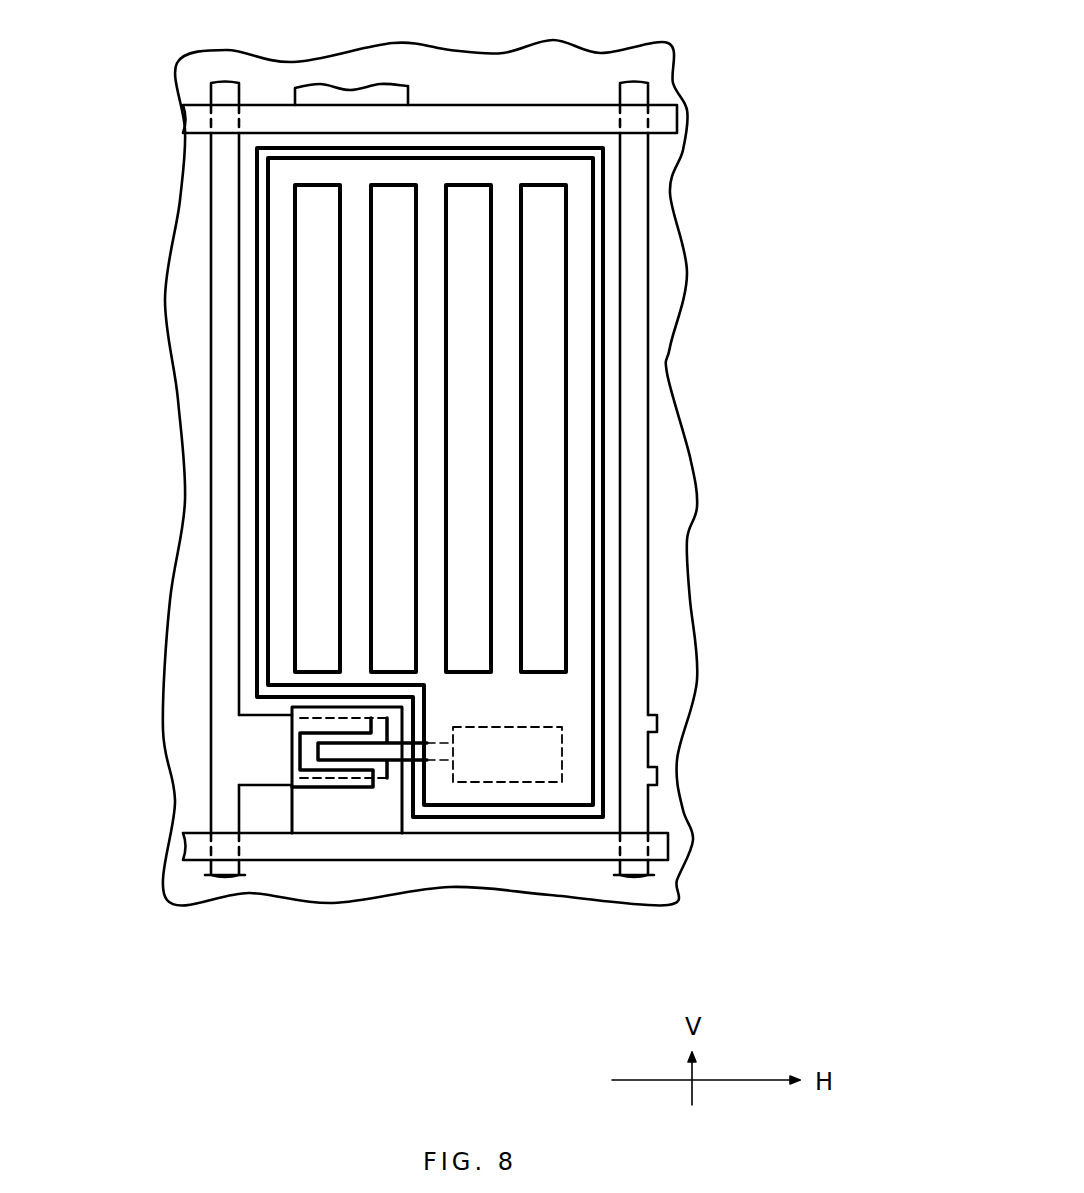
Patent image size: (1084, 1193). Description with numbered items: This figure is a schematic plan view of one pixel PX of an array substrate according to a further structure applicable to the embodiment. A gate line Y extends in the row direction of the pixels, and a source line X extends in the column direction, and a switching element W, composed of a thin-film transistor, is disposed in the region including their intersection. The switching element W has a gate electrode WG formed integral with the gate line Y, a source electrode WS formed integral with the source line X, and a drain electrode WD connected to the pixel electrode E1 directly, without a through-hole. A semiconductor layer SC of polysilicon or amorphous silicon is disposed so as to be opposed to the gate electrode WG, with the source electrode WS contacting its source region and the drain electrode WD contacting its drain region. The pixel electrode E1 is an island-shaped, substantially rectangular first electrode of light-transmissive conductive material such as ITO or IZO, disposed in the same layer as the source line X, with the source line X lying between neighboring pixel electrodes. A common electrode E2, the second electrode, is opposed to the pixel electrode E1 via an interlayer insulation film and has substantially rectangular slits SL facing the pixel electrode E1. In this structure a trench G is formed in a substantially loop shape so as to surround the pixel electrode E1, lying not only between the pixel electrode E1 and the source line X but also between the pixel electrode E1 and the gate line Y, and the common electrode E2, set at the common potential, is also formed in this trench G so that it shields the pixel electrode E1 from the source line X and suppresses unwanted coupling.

The slit SL is at (318, 187).
The gate line Y is at (670, 118).
The source line X is at (222, 877).
The pixel electrode E1 is at (595, 188).
The common electrode E2 is at (697, 507).
The trench G is at (603, 413).
The pixel PX is at (697, 290).
The semiconductor layer SC is at (300, 747).
The gate electrode WG is at (297, 763).
The source electrode WS is at (313, 790).
The drain electrode WD is at (382, 780).
The switching element W is at (357, 838).